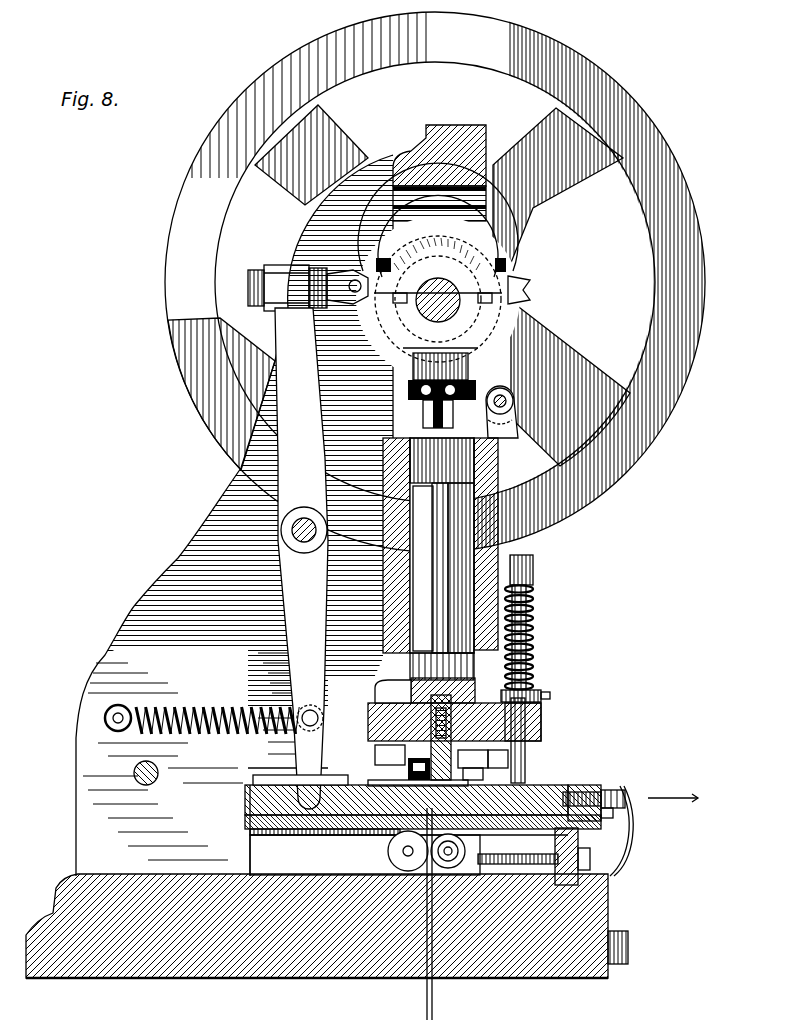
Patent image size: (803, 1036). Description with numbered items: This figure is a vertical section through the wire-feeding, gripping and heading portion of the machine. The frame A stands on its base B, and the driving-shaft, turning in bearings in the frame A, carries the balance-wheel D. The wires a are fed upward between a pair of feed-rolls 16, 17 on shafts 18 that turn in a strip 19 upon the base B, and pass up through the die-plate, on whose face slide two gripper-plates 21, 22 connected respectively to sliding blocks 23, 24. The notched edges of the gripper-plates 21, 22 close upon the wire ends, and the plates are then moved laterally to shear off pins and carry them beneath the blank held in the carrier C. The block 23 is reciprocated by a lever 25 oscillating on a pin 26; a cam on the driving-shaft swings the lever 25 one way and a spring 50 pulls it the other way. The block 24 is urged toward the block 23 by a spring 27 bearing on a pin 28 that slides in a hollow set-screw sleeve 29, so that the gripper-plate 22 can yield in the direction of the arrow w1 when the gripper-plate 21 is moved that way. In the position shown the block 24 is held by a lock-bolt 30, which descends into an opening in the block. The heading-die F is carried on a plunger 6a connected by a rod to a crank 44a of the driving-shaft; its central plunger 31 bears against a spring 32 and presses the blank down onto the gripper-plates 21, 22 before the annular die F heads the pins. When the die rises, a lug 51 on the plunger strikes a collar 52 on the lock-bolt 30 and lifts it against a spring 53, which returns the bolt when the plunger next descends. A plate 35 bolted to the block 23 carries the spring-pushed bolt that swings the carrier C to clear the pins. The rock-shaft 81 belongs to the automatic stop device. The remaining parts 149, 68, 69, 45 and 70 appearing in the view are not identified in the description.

The balance-wheel D is at (700, 320).
The frame A is at (180, 547).
The base B is at (172, 968).
The wires a is at (425, 1003).
The bolt 149 is at (372, 248).
The wedge 68 is at (524, 282).
The crank 44a is at (438, 271).
The plate 69 is at (405, 352).
The block 45 is at (442, 390).
The lug 70 is at (506, 393).
The lever 25 is at (301, 558).
The pin 26 is at (296, 535).
The plunger 6a is at (428, 568).
The spring 50 is at (197, 695).
The rock-shaft 81 is at (126, 766).
The spring 53 is at (524, 630).
The collar 52 is at (530, 686).
The lug 51 is at (454, 709).
The lock-bolt 30 is at (536, 704).
The gripper-plate 22 is at (518, 766).
The plate 35 is at (368, 740).
The spring 32 is at (446, 700).
The central plunger 31 is at (402, 761).
The heading-die F is at (473, 758).
The carrier C is at (470, 775).
The gripper-plate 21 is at (385, 778).
The sliding block 23 is at (237, 792).
The sliding block 24 is at (568, 803).
The pin 28 is at (600, 786).
The arrow w1 is at (673, 788).
The hollow set-screw block or sleeve 29 is at (608, 806).
The spring 27 is at (614, 855).
The shafts 18 is at (380, 850).
The strip 19 is at (365, 855).
The feed-roll 16 is at (381, 845).
The feed-roll 17 is at (460, 834).